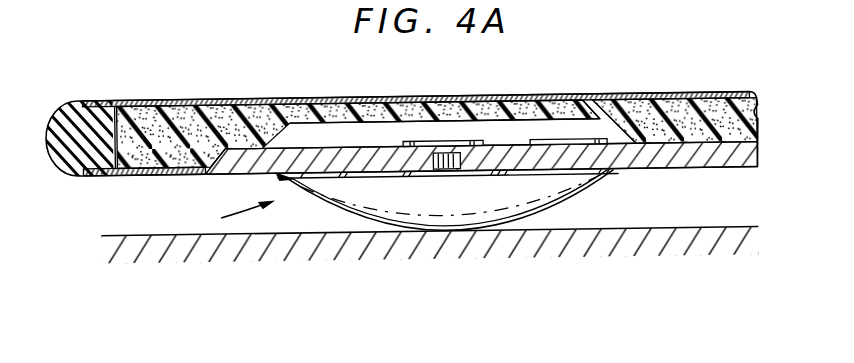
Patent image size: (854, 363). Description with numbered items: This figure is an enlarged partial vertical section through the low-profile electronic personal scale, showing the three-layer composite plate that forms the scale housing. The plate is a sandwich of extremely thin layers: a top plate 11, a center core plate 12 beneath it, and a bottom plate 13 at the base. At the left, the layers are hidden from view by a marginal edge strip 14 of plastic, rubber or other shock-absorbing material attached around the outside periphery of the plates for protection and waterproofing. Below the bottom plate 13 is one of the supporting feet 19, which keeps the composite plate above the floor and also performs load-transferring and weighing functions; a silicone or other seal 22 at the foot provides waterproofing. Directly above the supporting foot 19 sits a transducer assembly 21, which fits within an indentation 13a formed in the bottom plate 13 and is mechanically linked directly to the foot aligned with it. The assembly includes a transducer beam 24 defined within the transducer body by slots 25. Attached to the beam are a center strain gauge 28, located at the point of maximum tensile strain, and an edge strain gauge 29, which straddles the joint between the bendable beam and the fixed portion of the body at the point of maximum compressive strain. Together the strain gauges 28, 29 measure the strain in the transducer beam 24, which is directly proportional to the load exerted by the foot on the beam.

The top plate 11 is at (685, 100).
The center core plate 12 is at (757, 117).
The bottom plate 13 is at (727, 177).
The indentation 13a is at (582, 100).
The marginal edge strip 14 is at (56, 120).
The supporting foot 19 is at (561, 206).
The transducer assembly 21 is at (192, 227).
The seal 22 is at (622, 178).
The transducer beam 24 is at (247, 107).
The slot 25 is at (325, 141).
The center strain gauge 28 is at (405, 146).
The edge strain gauge 29 is at (548, 146).